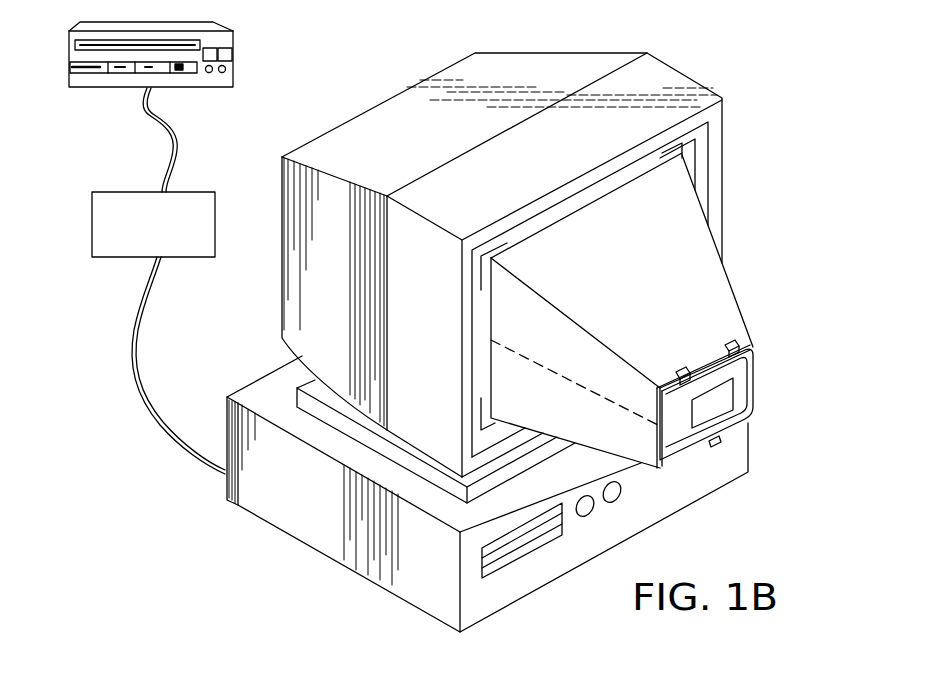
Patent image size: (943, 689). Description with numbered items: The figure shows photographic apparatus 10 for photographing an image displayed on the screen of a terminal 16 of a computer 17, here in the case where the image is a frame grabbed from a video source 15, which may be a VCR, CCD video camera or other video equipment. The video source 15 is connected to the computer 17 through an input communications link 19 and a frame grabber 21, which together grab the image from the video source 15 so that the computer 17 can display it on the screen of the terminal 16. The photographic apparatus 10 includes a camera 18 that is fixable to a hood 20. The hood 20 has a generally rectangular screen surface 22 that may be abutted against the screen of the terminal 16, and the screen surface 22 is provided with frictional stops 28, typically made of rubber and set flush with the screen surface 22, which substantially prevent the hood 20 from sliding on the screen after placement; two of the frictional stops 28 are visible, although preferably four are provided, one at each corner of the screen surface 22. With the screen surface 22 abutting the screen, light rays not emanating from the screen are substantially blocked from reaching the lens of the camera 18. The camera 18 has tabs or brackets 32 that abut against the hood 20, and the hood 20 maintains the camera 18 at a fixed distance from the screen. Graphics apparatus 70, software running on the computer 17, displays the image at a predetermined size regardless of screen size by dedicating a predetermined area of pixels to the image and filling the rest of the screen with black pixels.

The photographic apparatus 10 is at (542, 352).
The video source 15 is at (233, 36).
The terminal 16 is at (367, 130).
The computer 17 is at (257, 502).
The camera 18 is at (752, 395).
The input communications link 19 is at (172, 148).
The hood 20 is at (714, 293).
The frame grabber 21 is at (110, 195).
The screen surface 22 is at (575, 206).
The frictional stops 28 is at (505, 252).
The tabs or brackets 32 is at (722, 345).
The graphics apparatus 70 is at (512, 596).